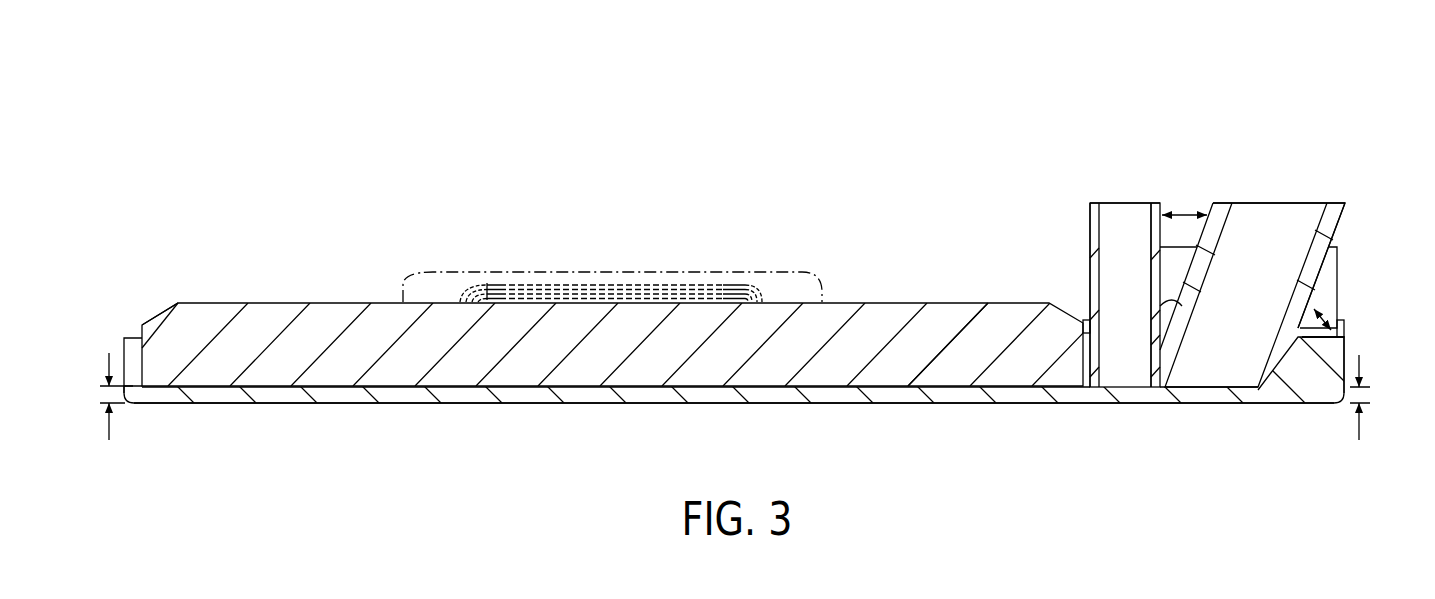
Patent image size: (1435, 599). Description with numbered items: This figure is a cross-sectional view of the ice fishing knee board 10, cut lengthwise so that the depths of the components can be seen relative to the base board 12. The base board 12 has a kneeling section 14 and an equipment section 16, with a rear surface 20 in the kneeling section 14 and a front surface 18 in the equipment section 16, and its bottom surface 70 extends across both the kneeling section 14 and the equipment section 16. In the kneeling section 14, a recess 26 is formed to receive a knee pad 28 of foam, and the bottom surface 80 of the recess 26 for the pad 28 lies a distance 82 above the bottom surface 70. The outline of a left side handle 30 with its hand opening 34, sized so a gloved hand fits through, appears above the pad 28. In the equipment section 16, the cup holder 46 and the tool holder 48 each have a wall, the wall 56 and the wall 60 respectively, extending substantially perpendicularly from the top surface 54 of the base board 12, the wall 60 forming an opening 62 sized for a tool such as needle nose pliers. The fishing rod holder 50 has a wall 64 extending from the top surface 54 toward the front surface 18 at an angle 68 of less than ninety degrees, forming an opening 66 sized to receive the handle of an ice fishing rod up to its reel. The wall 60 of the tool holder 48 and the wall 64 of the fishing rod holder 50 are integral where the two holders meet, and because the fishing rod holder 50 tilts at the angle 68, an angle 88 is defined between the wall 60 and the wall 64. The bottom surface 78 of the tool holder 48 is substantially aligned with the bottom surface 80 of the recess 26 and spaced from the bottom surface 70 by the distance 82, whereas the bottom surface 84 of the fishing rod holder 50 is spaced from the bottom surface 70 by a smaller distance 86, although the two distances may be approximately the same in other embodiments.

The ice fishing knee board 10 is at (312, 72).
The base board 12 is at (897, 395).
The kneeling section 14 is at (368, 185).
The equipment section 16 is at (1062, 118).
The front surface 18 is at (1362, 352).
The rear surface 20 is at (109, 353).
The recess 26 is at (138, 322).
The knee pad 28 is at (237, 345).
The left side handle 30 is at (438, 284).
The hand opening 34 is at (570, 296).
The cup holder 46 is at (1332, 268).
The tool holder 48 is at (1118, 247).
The fishing rod holder 50 is at (1262, 222).
The top surface 54 is at (1347, 332).
The wall 56 is at (1180, 246).
The wall 60 is at (1093, 204).
The opening 62 is at (1126, 197).
The wall 64 is at (1332, 222).
The opening 66 is at (1301, 197).
The angle 68 is at (1323, 318).
The bottom surface 70 is at (735, 404).
The bottom surface 78 is at (1127, 385).
The bottom surface 80 is at (947, 387).
The distance 82 is at (109, 425).
The bottom surface 84 is at (1208, 388).
The distance 86 is at (1359, 425).
The angle 88 is at (1195, 214).